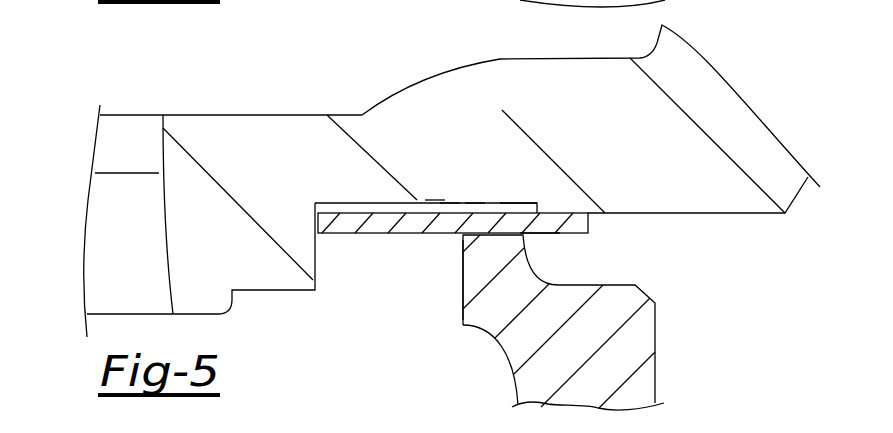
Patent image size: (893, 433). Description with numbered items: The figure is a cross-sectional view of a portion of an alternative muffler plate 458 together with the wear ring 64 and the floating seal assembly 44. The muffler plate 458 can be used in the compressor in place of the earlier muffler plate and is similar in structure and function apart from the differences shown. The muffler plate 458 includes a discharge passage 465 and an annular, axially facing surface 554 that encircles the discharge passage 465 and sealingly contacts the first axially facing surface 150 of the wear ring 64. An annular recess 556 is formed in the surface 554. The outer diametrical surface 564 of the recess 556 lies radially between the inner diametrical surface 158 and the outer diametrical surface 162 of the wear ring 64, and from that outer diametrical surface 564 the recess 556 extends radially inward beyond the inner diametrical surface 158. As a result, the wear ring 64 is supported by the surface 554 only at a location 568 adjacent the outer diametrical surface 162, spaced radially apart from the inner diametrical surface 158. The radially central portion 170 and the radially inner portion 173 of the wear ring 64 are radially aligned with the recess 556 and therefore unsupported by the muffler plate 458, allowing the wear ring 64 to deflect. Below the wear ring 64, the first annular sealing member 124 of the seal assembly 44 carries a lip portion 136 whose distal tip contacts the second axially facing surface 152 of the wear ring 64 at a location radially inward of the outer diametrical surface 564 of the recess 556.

The floating seal assembly 44 is at (660, 292).
The wear ring 64 is at (541, 243).
The first annular sealing member 124 is at (642, 335).
The lip portion 136 is at (463, 268).
The first axially facing surface 150 is at (447, 213).
The second axially facing surface 152 is at (398, 233).
The inner diametrical surface 158 is at (318, 227).
The outer diametrical surface 162 is at (610, 220).
The radially central portion 170 is at (435, 213).
The radially inner portion 173 is at (353, 213).
The muffler plate 458 is at (213, 110).
The discharge passage 465 is at (160, 153).
The annular axially facing surface 554 is at (693, 213).
The annular recess 556 is at (475, 210).
The outer diametrical surface of the recess 564 is at (530, 210).
The support location 568 is at (577, 213).